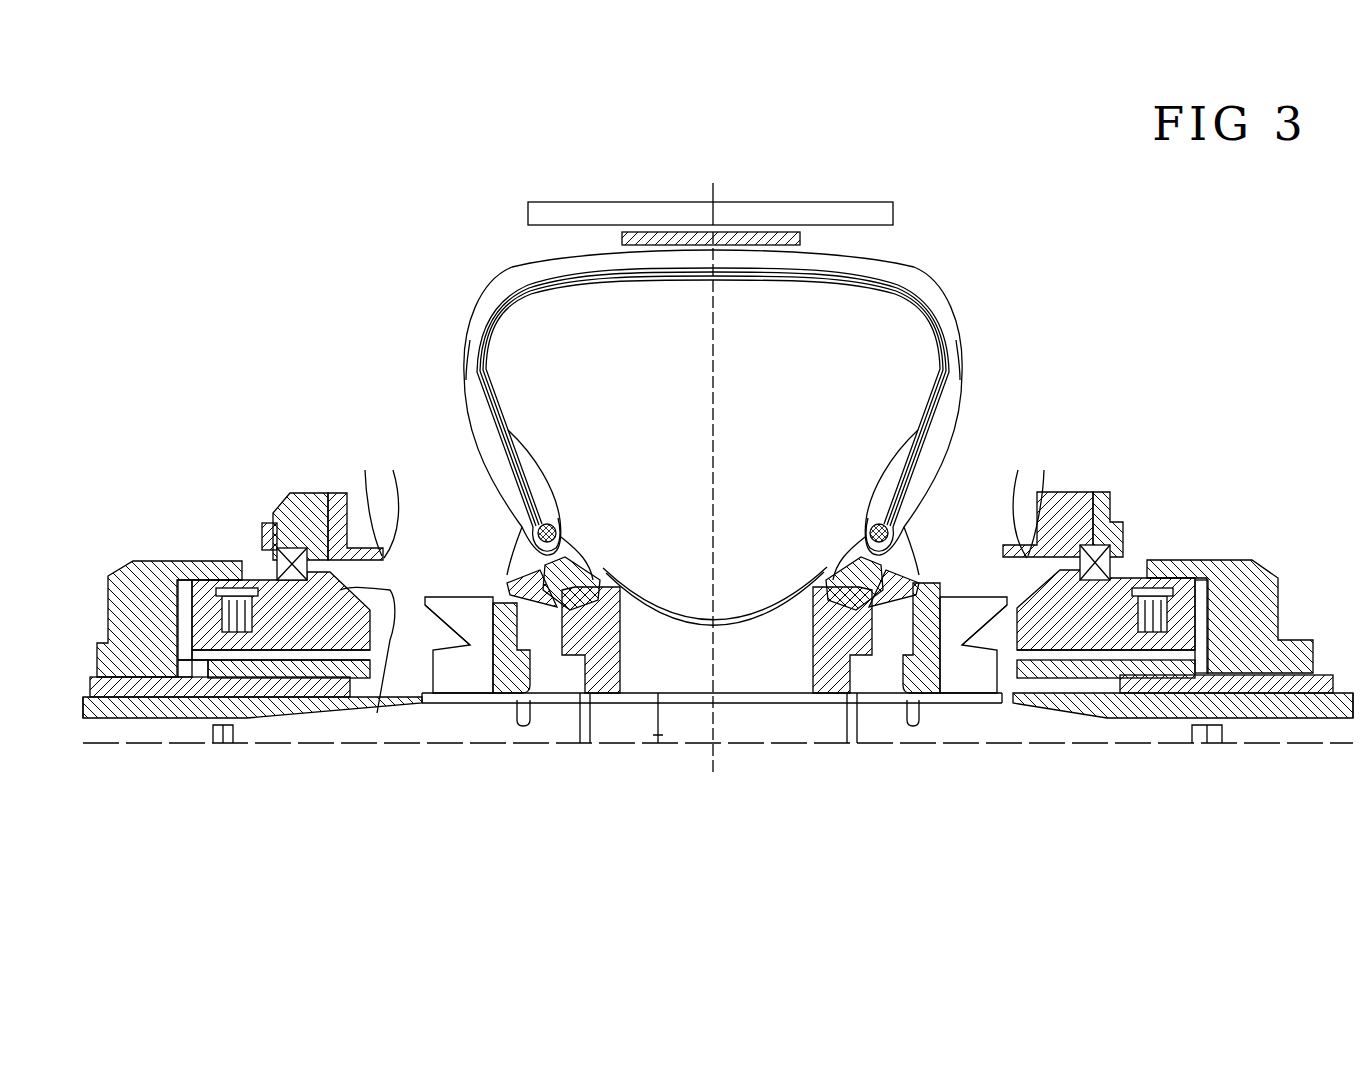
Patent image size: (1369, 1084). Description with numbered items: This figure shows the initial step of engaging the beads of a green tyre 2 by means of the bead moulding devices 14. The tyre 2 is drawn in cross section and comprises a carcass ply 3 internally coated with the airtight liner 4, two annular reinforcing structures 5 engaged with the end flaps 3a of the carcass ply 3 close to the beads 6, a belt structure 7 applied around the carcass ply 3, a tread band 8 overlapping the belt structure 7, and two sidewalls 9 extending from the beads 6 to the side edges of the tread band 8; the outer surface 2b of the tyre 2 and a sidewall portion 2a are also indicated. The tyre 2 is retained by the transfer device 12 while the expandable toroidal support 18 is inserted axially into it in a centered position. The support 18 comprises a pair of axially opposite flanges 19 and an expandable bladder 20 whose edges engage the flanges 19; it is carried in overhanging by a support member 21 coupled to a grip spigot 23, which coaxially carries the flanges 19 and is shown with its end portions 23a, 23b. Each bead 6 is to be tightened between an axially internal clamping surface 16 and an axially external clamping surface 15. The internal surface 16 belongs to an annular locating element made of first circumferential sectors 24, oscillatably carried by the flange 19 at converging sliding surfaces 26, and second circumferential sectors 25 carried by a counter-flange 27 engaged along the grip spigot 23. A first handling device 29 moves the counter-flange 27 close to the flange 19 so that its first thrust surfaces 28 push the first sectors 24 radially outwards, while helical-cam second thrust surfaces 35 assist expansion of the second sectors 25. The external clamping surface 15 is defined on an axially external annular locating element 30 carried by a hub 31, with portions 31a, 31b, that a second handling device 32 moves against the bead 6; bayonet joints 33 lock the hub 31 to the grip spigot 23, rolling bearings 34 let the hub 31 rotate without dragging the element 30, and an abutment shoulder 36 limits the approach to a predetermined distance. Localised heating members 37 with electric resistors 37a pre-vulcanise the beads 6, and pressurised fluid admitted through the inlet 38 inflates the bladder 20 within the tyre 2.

The tyre 2 is at (905, 263).
The sidewall portion 2a is at (553, 303).
The outer surface 2b is at (600, 265).
The carcass ply 3 is at (958, 280).
The end flaps 3a is at (530, 523).
The liner 4 is at (870, 315).
The annular reinforcing structures 5 is at (562, 527).
The beads 6 is at (520, 505).
The belt structure 7 is at (810, 275).
The tread band 8 is at (572, 262).
The sidewalls 9 is at (477, 350).
The transfer device 12 is at (673, 205).
The bead moulding devices 14 is at (257, 594).
The axially external clamping surface 15 is at (370, 475).
The axially internal clamping surface 16 is at (530, 563).
The expandable toroidal support 18 is at (578, 745).
The flanges 19 is at (643, 745).
The expandable bladder 20 is at (735, 620).
The support member 21 is at (130, 722).
The grip spigot 23 is at (332, 745).
The base plate hook 23a is at (1210, 745).
The base plate hook 23b is at (225, 745).
The first circumferential sectors 24 is at (545, 700).
The second circumferential sectors 25 is at (458, 615).
The sliding surfaces 26 is at (578, 553).
The counter-flange 27 is at (463, 745).
The first thrust surfaces 28 is at (497, 575).
The first handling device 29 is at (190, 660).
The axially external annular locating element 30 is at (290, 497).
The hub 31 is at (195, 578).
The slide block lower portion 31a is at (300, 740).
The slide block groove 31b is at (265, 745).
The second handling device 32 is at (138, 561).
The bayonet joints 33 is at (520, 728).
The rolling bearings 34 is at (278, 512).
The second thrust surfaces 35 is at (395, 680).
The abutment shoulder 36 is at (392, 588).
The localised tyre heating members 37 is at (332, 493).
The electric resistors 37a is at (300, 548).
The inlet 38 is at (660, 745).